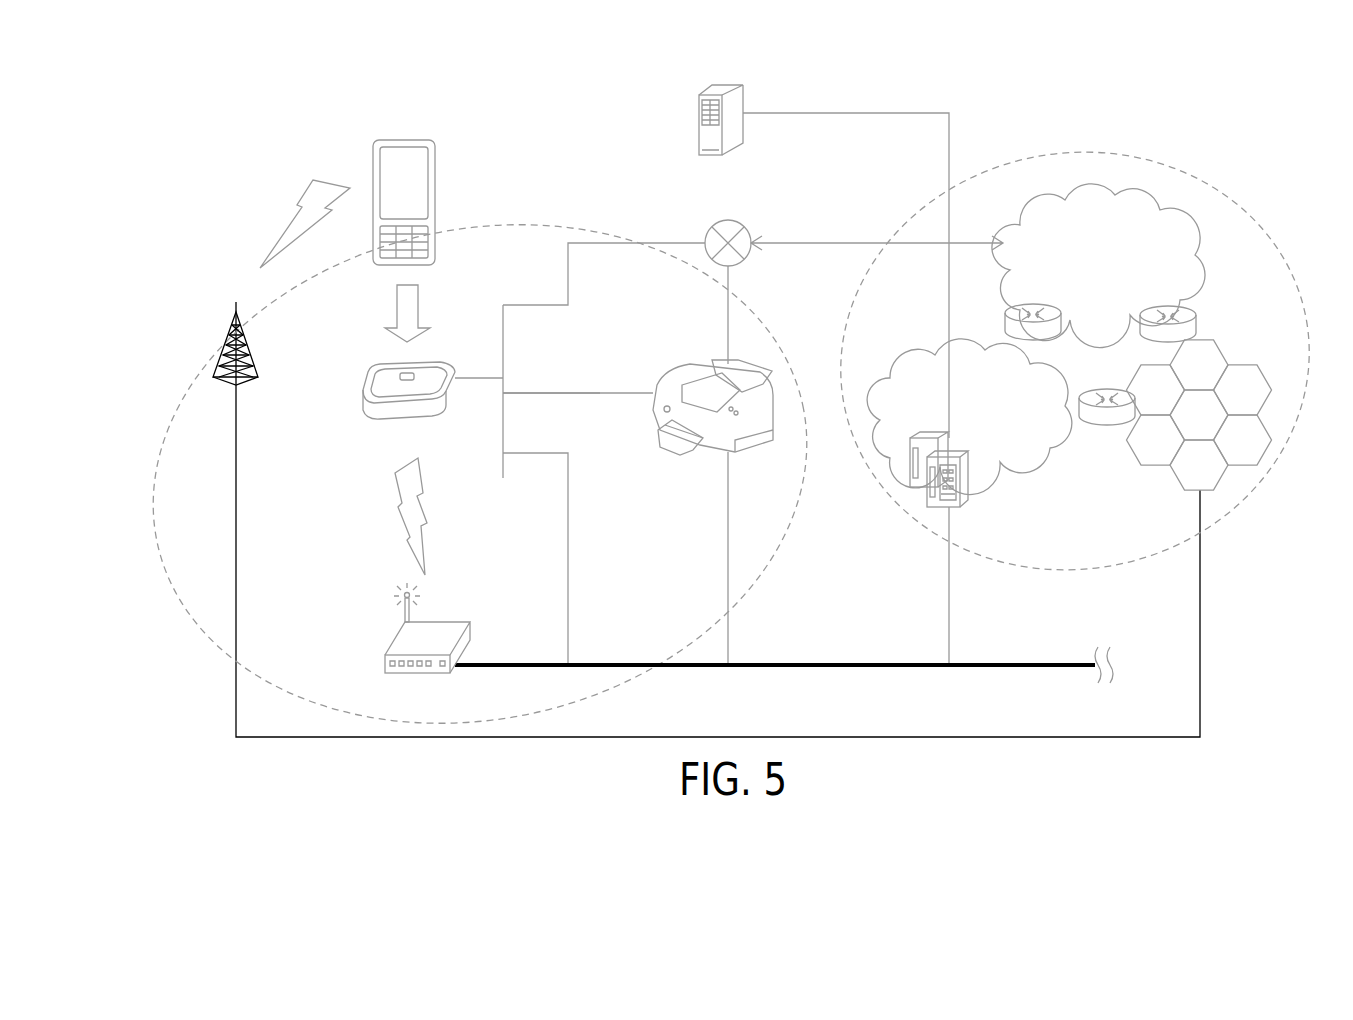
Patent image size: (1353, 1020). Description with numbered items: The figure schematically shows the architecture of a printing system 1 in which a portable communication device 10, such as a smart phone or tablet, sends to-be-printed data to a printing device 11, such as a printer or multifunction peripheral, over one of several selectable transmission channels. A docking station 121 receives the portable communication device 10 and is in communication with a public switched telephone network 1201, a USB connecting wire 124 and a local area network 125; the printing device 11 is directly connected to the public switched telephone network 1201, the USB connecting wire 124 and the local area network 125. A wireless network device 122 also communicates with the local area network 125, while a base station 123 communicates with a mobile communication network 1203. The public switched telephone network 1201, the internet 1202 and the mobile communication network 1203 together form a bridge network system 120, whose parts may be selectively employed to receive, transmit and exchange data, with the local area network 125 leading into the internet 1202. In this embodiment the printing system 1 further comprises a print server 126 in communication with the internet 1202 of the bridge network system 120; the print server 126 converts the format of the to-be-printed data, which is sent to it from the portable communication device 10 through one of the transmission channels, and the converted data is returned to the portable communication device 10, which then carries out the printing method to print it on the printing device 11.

The printing system 1 is at (1240, 129).
The portable communication device 10 is at (373, 172).
The printing device 11 is at (752, 446).
The bridge network system 120 is at (850, 300).
The docking station 121 is at (378, 368).
The wireless network device 122 is at (390, 640).
The base station 123 is at (222, 327).
The USB connecting wire 124 is at (590, 393).
The local area network 125 is at (595, 664).
The print server 126 is at (700, 120).
The public switched telephone network 1201 is at (1205, 248).
The internet 1202 is at (998, 468).
The mobile communication network 1203 is at (1178, 478).